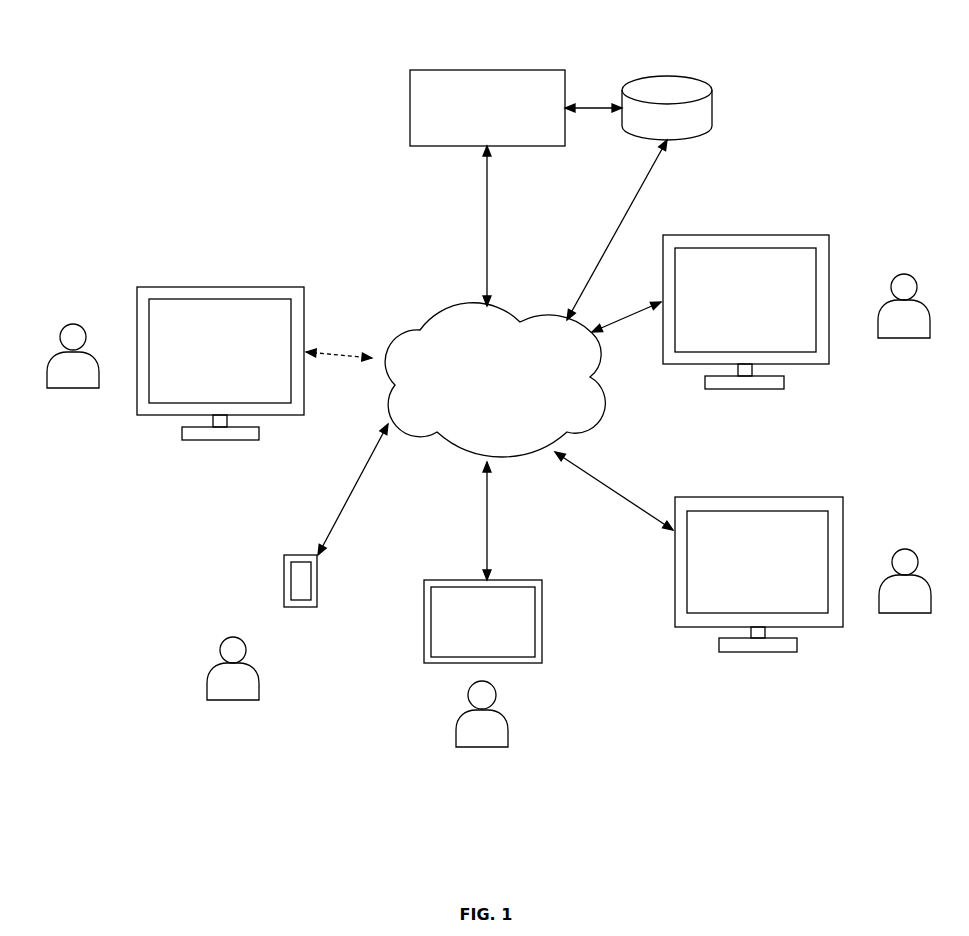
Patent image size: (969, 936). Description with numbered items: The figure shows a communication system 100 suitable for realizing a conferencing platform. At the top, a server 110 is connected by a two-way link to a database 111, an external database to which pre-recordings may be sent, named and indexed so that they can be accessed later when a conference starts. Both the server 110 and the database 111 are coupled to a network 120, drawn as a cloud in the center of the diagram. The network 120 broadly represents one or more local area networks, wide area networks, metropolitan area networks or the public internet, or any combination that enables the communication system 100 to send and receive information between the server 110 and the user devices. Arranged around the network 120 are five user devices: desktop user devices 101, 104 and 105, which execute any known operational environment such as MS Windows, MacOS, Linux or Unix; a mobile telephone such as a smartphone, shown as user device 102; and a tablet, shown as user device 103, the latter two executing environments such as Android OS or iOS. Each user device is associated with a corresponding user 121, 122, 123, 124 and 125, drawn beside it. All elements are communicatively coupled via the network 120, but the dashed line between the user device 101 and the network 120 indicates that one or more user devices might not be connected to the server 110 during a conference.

The communication system 100 is at (272, 103).
The server 110 is at (544, 69).
The database 111 is at (693, 80).
The network 120 is at (424, 320).
The desktop user device 101 is at (166, 285).
The user device (smartphone) 102 is at (296, 552).
The user device (tablet) 103 is at (534, 578).
The desktop user device 104 is at (815, 495).
The desktop user device 105 is at (805, 233).
The user 121 is at (43, 360).
The user 122 is at (262, 692).
The user 123 is at (510, 728).
The user 124 is at (934, 585).
The user 125 is at (933, 310).